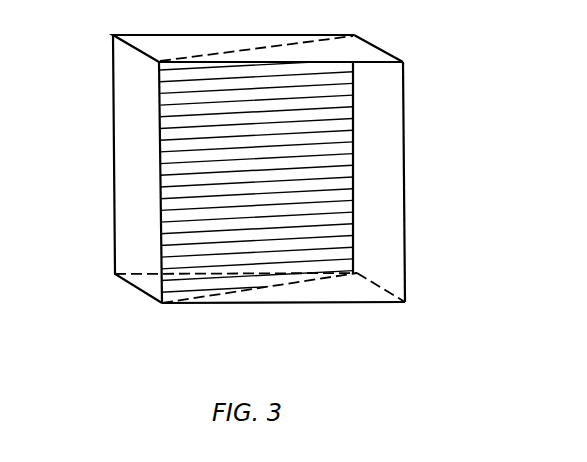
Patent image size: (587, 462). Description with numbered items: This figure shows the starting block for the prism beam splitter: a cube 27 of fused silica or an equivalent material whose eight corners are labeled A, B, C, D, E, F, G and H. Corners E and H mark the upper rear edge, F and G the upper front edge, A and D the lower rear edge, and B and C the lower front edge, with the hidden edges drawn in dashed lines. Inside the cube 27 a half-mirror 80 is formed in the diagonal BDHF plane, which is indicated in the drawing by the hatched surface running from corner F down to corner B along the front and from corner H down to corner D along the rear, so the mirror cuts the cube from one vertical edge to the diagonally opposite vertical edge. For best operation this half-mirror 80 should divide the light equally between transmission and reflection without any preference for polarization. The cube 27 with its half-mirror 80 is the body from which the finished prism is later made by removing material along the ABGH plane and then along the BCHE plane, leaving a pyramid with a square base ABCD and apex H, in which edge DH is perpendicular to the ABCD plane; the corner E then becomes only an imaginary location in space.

The cube 27 is at (405, 163).
The half-mirror 80 is at (305, 288).
The corner A is at (124, 169).
The corner B is at (278, 317).
The corner C is at (386, 303).
The corner D is at (368, 269).
The corner E is at (217, 36).
The corner F is at (160, 170).
The corner G is at (290, 60).
The corner H is at (281, 36).